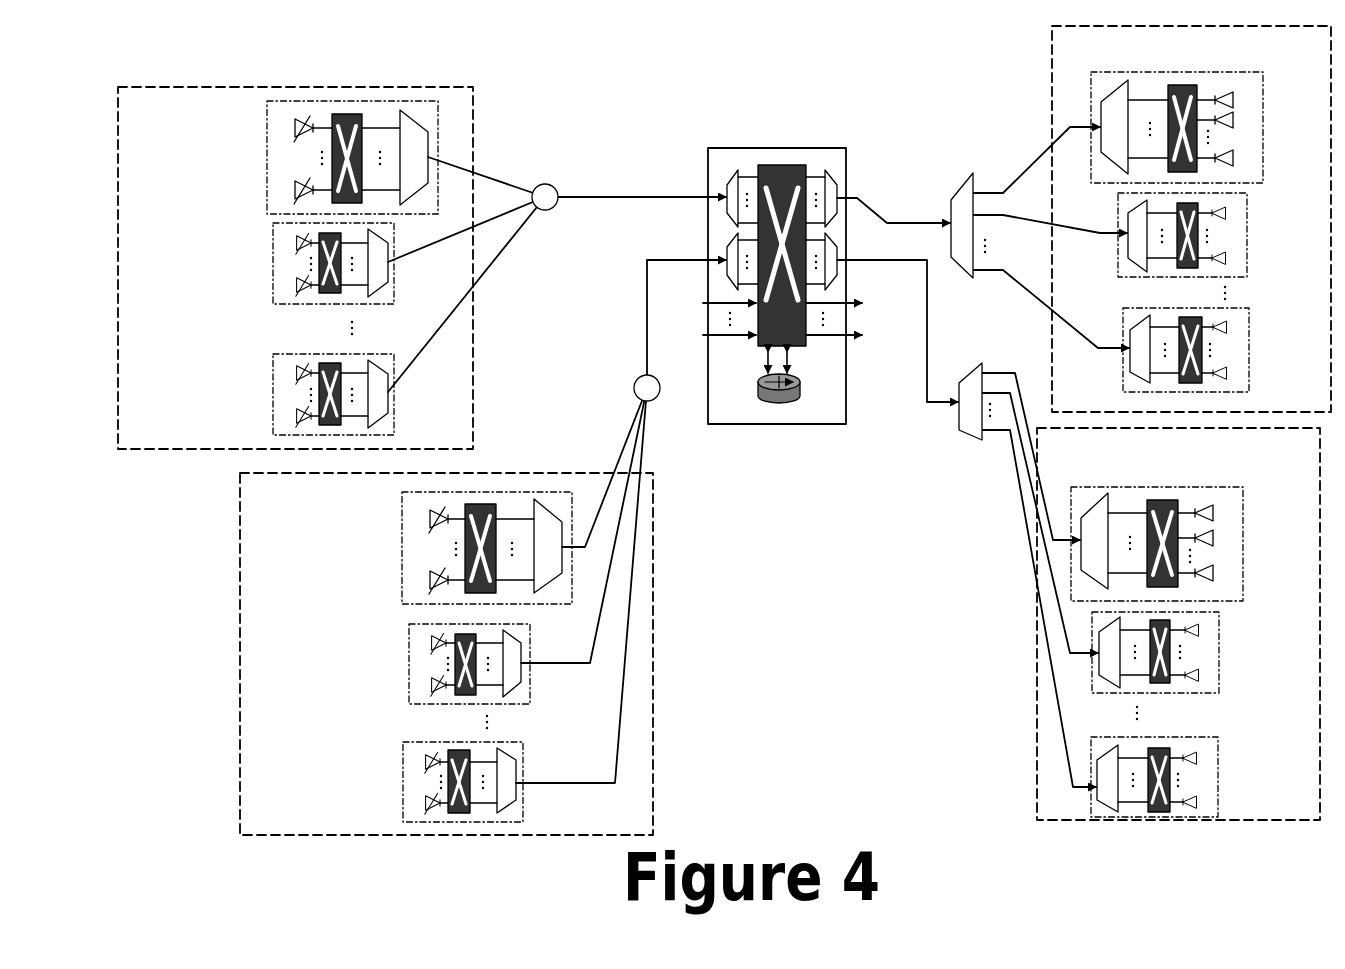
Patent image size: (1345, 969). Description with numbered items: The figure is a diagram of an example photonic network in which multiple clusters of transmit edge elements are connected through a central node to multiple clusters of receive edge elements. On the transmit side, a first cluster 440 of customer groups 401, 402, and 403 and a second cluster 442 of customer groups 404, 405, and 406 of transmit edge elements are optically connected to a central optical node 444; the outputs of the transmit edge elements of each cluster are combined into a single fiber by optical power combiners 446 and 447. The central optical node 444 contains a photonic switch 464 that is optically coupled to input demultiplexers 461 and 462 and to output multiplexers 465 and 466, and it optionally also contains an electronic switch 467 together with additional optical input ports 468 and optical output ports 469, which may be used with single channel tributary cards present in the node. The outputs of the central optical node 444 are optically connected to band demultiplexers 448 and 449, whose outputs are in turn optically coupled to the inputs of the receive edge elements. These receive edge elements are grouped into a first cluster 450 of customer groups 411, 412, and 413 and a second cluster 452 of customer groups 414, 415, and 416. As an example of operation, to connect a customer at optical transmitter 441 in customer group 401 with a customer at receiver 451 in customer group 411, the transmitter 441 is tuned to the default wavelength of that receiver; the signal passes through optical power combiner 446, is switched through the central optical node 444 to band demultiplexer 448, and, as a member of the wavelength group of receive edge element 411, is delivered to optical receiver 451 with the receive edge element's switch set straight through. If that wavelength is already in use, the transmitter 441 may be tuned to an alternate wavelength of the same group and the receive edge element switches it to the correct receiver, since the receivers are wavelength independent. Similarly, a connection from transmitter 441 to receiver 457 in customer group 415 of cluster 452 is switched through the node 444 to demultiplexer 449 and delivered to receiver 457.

The first cluster 440 is at (368, 86).
The optical transmitter 441 is at (294, 128).
The customer group 401 is at (305, 157).
The customer group 402 is at (272, 252).
The customer group 403 is at (270, 375).
The optical power combiner 446 is at (553, 208).
The second cluster 442 is at (462, 477).
The customer group 404 is at (400, 554).
The customer group 405 is at (407, 665).
The customer group 406 is at (405, 766).
The optical power combiner 447 is at (655, 400).
The central optical node 444 is at (813, 148).
The input demultiplexer 461 is at (727, 190).
The input demultiplexer 462 is at (727, 252).
The photonic switch 464 is at (777, 165).
The output multiplexer 465 is at (833, 170).
The output multiplexer 466 is at (838, 262).
The optical input ports 468 is at (705, 313).
The optical output ports 469 is at (865, 313).
The electronic switch 467 is at (782, 405).
The band demultiplexer 448 is at (965, 178).
The band demultiplexer 449 is at (975, 434).
The first cluster 450 is at (1052, 27).
The customer group 411 is at (1207, 127).
The optical receiver 451 is at (1236, 120).
The customer group 412 is at (1247, 272).
The customer group 413 is at (1250, 385).
The second cluster 452 is at (1037, 748).
The customer group 414 is at (1243, 583).
The customer group 415 is at (1190, 656).
The optical receiver 457 is at (1203, 676).
The customer group 416 is at (1218, 802).